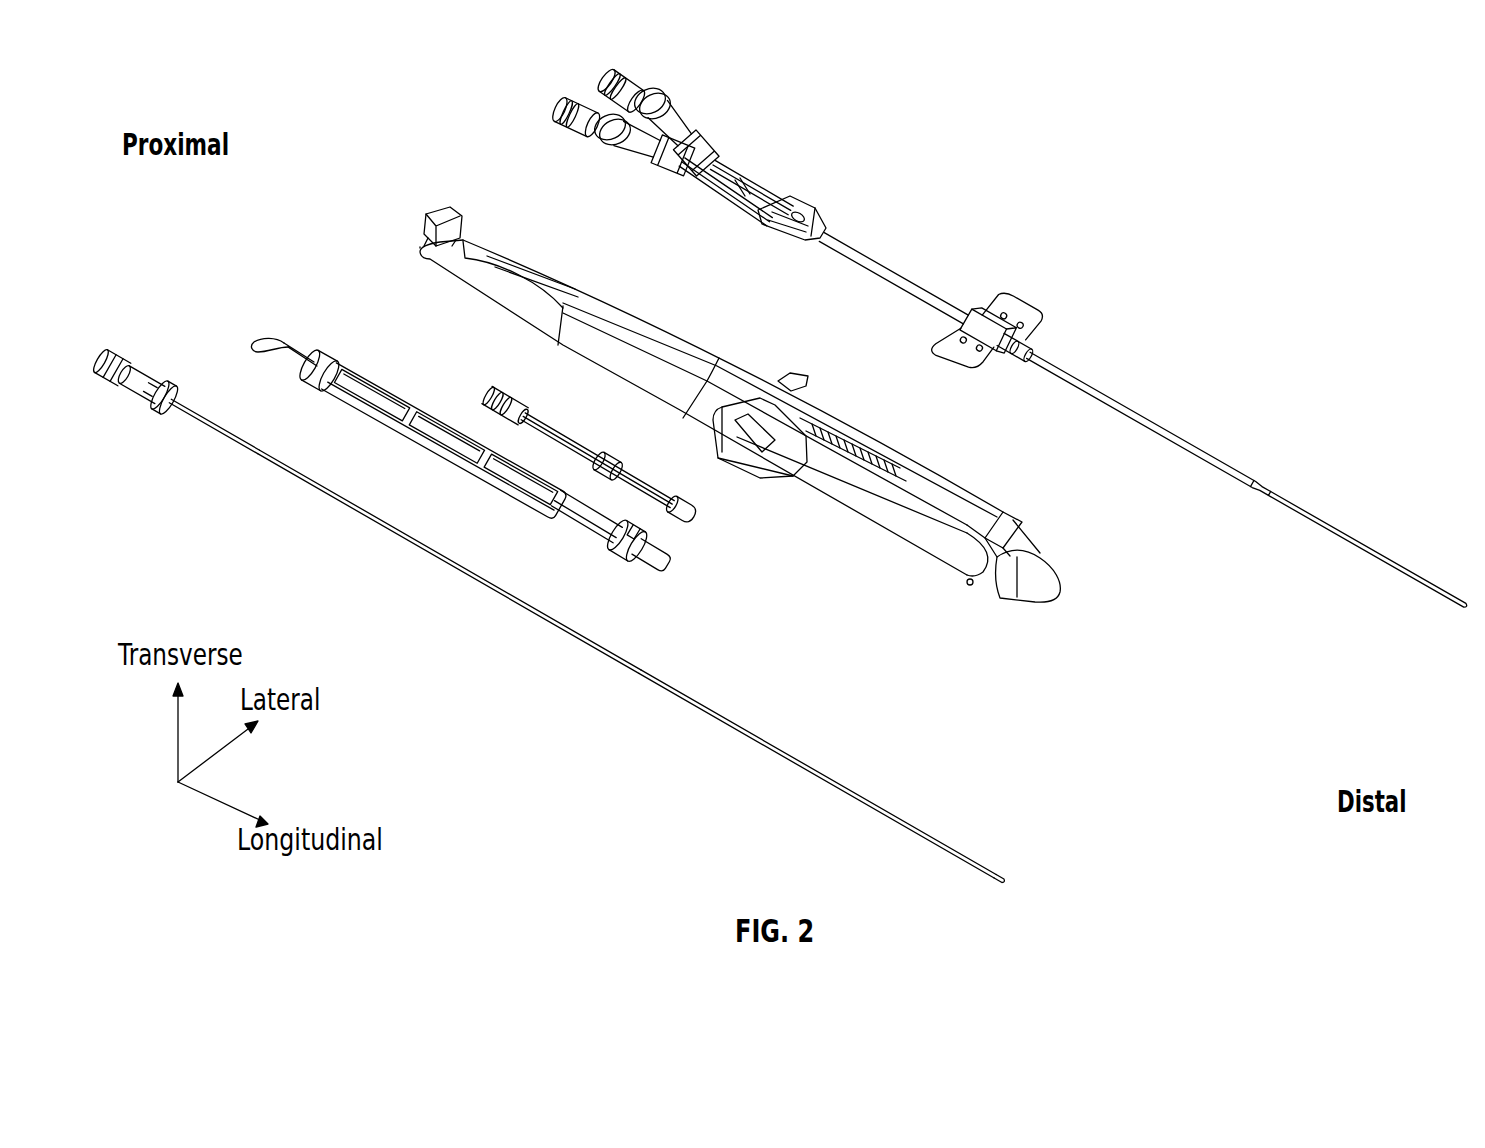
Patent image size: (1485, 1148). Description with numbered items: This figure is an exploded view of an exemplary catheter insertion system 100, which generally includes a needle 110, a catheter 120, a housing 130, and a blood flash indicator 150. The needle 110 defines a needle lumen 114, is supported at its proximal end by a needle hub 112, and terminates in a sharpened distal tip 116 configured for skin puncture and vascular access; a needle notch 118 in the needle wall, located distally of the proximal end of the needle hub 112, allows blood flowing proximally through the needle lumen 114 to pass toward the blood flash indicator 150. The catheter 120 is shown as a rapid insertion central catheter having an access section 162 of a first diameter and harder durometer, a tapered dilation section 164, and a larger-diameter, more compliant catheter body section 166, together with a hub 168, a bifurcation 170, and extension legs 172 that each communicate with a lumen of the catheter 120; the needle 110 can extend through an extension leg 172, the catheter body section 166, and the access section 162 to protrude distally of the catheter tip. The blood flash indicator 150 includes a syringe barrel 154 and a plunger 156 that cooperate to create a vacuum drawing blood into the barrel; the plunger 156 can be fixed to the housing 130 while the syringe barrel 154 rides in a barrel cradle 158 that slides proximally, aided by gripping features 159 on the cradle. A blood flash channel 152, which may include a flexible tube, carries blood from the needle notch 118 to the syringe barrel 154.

The catheter insertion system 100 is at (316, 93).
The needle 110 is at (517, 603).
The needle hub 112 is at (128, 396).
The needle lumen 114 is at (640, 680).
The distal tip 116 is at (1005, 880).
The needle notch 118 is at (176, 407).
The catheter 120 is at (914, 264).
The housing 130 is at (493, 218).
The blood flash indicator 150 is at (389, 370).
The blood flash channel 152 is at (290, 340).
The syringe barrel 154 is at (505, 505).
The plunger 156 is at (708, 518).
The barrel cradle 158 is at (563, 448).
The gripping features 159 is at (658, 548).
The access section 162 is at (1391, 563).
The dilation section 164 is at (1261, 487).
The catheter body section 166 is at (1181, 440).
The hub 168 is at (1013, 320).
The bifurcation 170 is at (794, 217).
The extension legs 172 is at (729, 145).